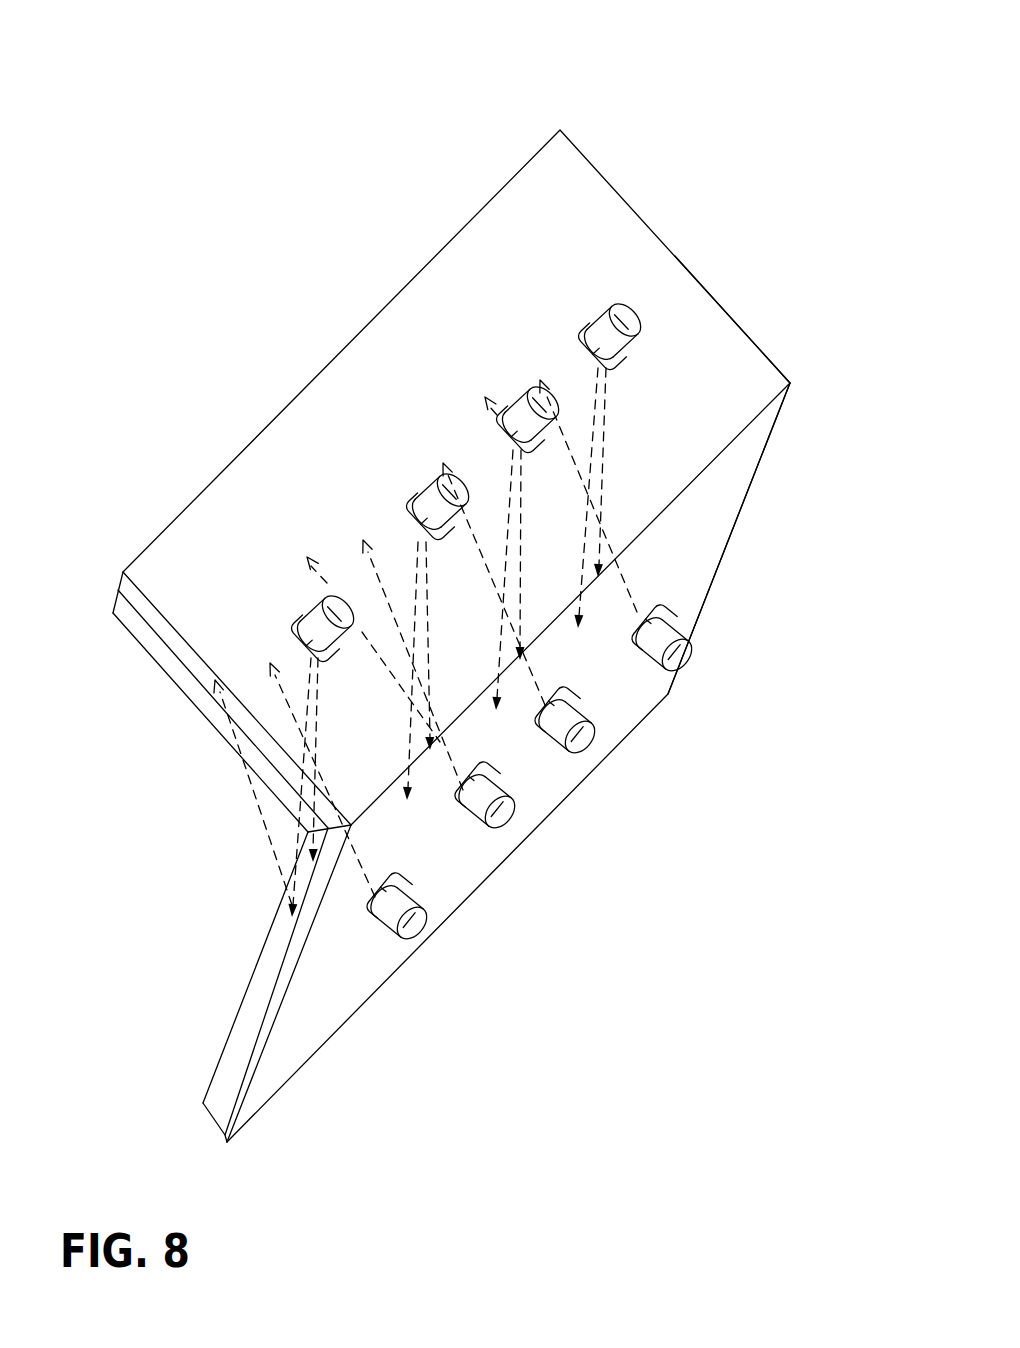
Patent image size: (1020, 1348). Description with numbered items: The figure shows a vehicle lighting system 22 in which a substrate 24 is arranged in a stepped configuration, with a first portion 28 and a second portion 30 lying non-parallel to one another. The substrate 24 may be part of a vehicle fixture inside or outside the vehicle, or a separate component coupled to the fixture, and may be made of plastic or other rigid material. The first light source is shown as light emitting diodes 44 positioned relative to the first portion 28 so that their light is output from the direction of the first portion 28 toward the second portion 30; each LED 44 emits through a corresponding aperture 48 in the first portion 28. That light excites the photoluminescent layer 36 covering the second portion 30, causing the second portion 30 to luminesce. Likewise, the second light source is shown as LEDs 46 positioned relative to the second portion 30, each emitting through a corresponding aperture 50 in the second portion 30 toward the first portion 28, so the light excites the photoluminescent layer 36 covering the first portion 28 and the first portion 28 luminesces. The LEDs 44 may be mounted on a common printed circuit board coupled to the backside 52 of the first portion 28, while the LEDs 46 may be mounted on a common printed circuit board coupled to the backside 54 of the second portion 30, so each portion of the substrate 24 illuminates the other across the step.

The vehicle lighting system 22 is at (722, 58).
The substrate 24 is at (792, 346).
The first portion 28 is at (647, 273).
The second portion 30 is at (705, 568).
The photoluminescent layer 36 is at (176, 676).
The light emitting diodes 44 is at (607, 327).
The LEDs 46 is at (682, 672).
The aperture 48 is at (592, 350).
The aperture 50 is at (672, 612).
The backside 52 is at (707, 320).
The backside 54 is at (728, 506).